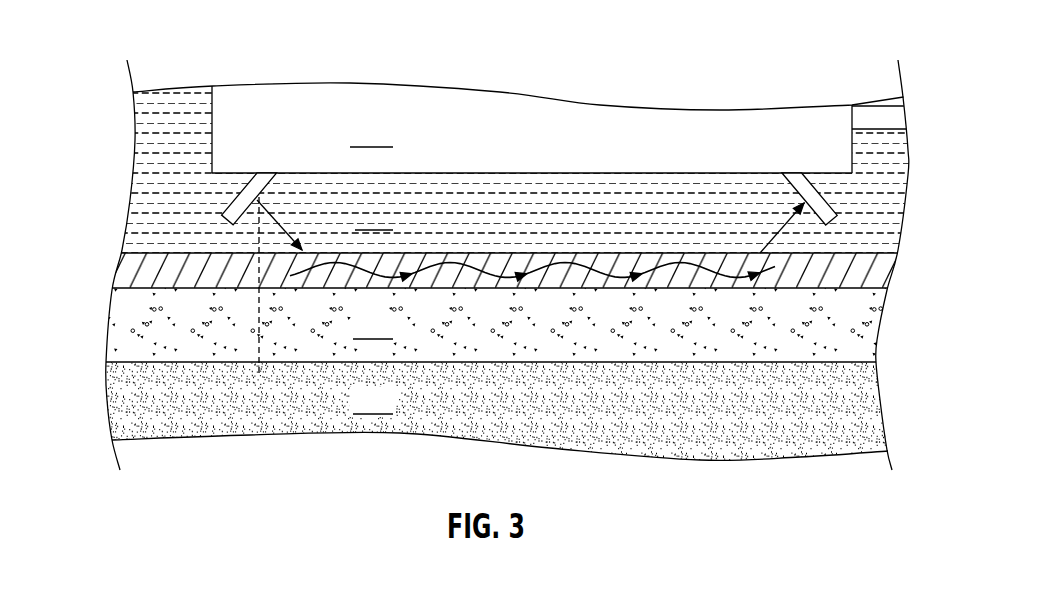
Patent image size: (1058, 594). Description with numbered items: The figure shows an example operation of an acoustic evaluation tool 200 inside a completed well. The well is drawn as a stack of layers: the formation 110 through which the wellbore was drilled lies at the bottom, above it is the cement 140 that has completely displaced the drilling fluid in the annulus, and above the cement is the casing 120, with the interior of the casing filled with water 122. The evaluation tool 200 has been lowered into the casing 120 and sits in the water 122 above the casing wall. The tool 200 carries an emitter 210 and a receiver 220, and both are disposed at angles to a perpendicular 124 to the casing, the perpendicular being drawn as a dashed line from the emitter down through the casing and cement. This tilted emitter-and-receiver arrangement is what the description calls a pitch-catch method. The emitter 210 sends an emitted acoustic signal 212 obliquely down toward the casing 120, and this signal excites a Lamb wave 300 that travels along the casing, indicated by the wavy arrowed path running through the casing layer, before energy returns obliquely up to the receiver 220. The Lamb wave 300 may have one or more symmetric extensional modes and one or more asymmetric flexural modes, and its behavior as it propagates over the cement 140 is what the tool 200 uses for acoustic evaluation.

The formation 110 is at (510, 417).
The casing 120 is at (505, 273).
The water 122 is at (510, 164).
The perpendicular 124 is at (250, 333).
The cement 140 is at (510, 325).
The acoustic evaluation tool 200 is at (532, 121).
The emitter 210 is at (247, 198).
The emitted acoustic signal 212 is at (257, 243).
The receiver 220 is at (812, 197).
The Lamb wave 300 is at (350, 272).